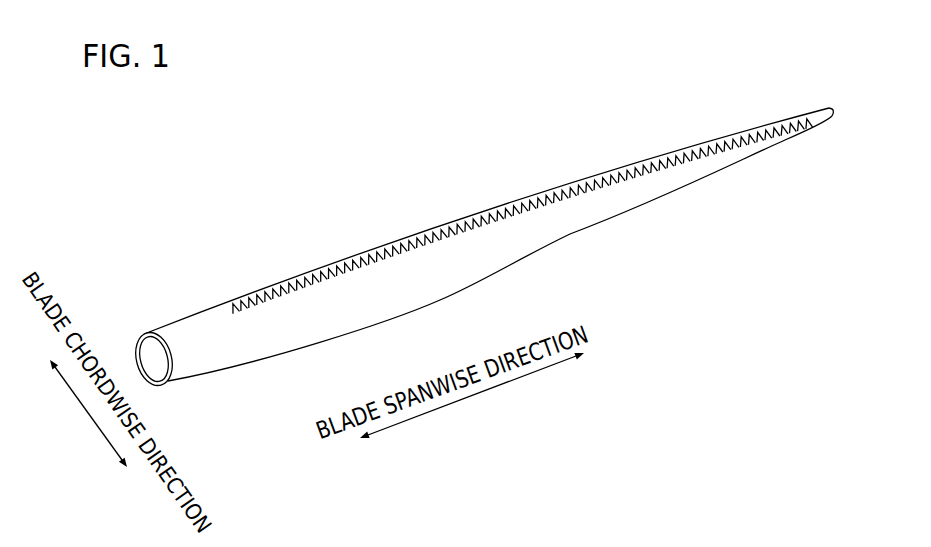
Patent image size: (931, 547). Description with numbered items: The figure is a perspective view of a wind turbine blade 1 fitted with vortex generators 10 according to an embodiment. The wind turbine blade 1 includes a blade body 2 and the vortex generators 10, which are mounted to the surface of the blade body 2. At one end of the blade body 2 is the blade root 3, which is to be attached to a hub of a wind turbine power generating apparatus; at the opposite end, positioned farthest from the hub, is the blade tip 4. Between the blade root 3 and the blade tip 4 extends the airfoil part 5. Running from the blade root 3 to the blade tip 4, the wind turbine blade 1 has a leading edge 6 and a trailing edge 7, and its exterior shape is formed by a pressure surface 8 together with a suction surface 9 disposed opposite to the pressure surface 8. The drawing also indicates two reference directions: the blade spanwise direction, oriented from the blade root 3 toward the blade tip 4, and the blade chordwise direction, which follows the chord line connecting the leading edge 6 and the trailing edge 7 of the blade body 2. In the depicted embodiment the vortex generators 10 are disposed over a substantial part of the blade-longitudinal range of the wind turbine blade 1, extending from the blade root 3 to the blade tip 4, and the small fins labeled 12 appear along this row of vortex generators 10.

The wind turbine blade 1 is at (317, 162).
The blade body 2 is at (513, 200).
The blade root 3 is at (144, 334).
The blade tip 4 is at (830, 108).
The airfoil part 5 is at (428, 232).
The leading edge 6 is at (464, 219).
The trailing edge 7 is at (508, 263).
The pressure surface 8 is at (222, 345).
The suction surface 9 is at (257, 334).
The vortex generator 10 is at (588, 176).
The fin 12 is at (235, 300).